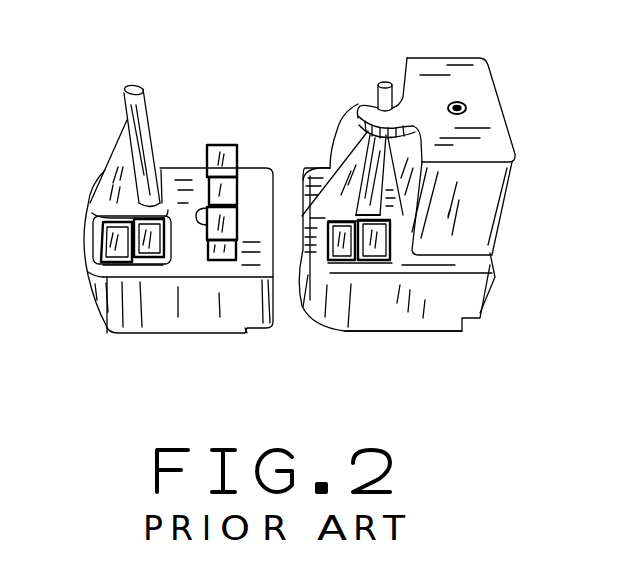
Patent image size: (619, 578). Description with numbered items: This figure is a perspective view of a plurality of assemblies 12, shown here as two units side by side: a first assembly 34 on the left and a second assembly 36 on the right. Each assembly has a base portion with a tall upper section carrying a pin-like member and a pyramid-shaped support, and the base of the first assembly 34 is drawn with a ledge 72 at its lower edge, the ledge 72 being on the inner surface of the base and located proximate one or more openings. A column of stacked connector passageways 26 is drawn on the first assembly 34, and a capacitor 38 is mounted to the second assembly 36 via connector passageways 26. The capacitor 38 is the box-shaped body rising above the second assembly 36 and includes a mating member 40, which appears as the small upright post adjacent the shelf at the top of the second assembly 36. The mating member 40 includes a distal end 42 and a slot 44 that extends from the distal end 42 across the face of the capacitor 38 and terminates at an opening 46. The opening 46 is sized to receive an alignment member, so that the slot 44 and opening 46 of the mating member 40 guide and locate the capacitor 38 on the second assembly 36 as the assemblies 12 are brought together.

The assemblies 12 is at (165, 348).
The connector passageways 26 is at (222, 145).
The first assembly 34 is at (203, 292).
The ledge 72 is at (224, 338).
The second assembly 36 is at (497, 286).
The capacitor 38 is at (508, 193).
The mating member 40 is at (396, 80).
The distal end 42 is at (325, 200).
The slot 44 is at (448, 212).
The opening 46 is at (400, 112).